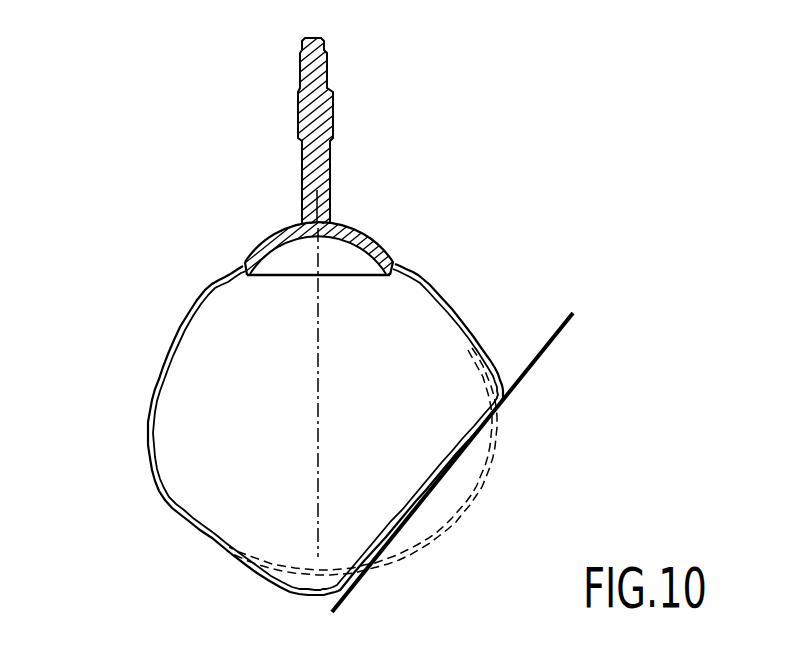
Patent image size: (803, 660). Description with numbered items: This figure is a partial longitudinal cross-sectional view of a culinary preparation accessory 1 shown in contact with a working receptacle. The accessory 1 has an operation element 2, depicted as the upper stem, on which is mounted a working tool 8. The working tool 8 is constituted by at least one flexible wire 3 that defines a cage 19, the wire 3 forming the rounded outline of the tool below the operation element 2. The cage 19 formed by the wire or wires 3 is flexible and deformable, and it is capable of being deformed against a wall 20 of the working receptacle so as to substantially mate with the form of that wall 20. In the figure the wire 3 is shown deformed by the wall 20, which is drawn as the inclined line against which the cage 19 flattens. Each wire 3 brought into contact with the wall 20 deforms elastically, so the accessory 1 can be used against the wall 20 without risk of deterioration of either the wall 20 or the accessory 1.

The accessory 1 is at (198, 192).
The operation element 2 is at (340, 153).
The flexible wire 3 is at (432, 285).
The working tool 8 is at (148, 352).
The cage 19 is at (390, 439).
The wall 20 is at (543, 343).